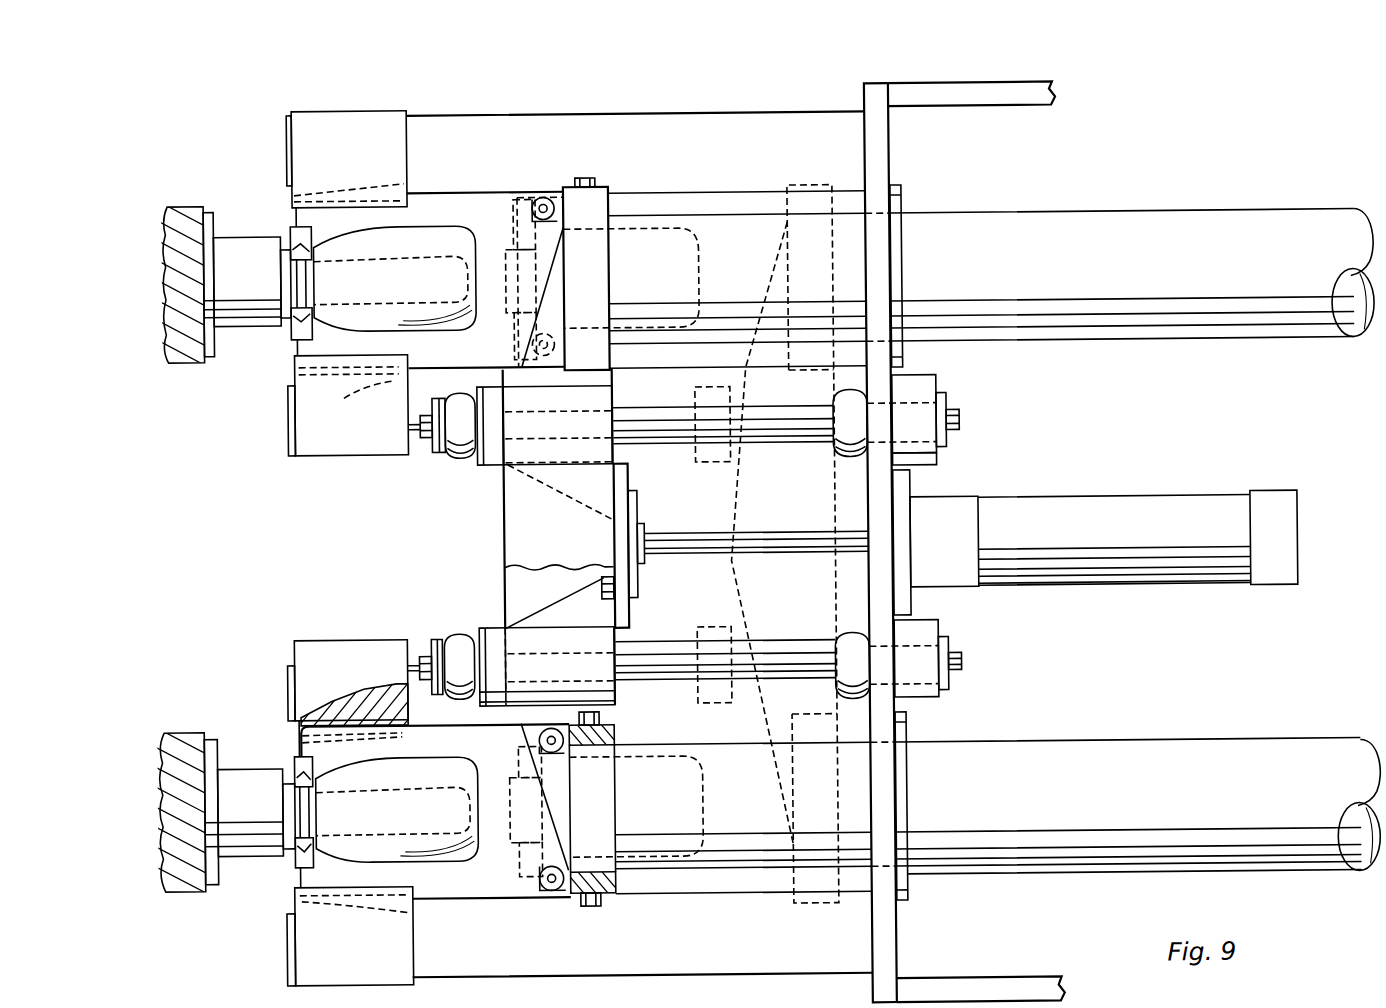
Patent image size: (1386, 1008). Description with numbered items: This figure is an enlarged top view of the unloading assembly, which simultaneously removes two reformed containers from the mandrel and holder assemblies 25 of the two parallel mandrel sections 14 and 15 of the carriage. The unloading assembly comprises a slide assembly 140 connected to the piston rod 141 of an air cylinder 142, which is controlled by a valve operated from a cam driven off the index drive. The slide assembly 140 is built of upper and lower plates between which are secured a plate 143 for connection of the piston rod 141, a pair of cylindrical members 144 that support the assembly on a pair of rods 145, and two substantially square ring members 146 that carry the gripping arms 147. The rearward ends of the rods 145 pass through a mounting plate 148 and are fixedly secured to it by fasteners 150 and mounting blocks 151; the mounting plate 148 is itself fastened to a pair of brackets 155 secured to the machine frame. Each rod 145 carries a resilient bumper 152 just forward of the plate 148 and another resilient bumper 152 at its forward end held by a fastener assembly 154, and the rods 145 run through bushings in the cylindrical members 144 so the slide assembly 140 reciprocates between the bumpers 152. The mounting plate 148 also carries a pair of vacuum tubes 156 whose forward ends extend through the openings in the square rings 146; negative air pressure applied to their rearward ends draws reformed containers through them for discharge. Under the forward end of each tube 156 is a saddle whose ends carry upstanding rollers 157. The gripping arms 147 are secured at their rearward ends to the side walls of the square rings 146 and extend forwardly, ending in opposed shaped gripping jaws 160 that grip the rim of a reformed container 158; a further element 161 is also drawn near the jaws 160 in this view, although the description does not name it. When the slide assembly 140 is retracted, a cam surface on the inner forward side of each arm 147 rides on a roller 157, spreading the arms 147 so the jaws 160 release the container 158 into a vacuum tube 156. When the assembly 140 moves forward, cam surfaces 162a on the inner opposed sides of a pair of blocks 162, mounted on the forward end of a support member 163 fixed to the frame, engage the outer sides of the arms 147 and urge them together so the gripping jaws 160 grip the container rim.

The mandrel section 14 is at (166, 203).
The mandrel section 15 is at (165, 730).
The mandrel and holder assembly 25 is at (235, 234).
The slide assembly 140 is at (526, 515).
The piston rod 141 is at (680, 533).
The air cylinder 142 is at (1142, 498).
The plate 143 is at (619, 470).
The cylindrical member 144 is at (490, 463).
The rod 145 is at (655, 407).
The square ring member 146 is at (597, 186).
The gripping arm 147 is at (482, 364).
The mounting plate 148 is at (880, 585).
The fastener 150 is at (960, 420).
The mounting block 151 is at (926, 378).
The resilient bumper 152 is at (450, 457).
The fastener assembly 154 is at (426, 413).
The bracket 155 is at (1030, 108).
The vacuum tube 156 is at (1150, 214).
The roller 157 is at (543, 198).
The reformed container 158 is at (440, 232).
The gripping jaw 160 is at (292, 236).
The rod 161 is at (320, 728).
The block 162 is at (304, 135).
The cam surface 162a is at (385, 380).
The support member 163 is at (656, 112).